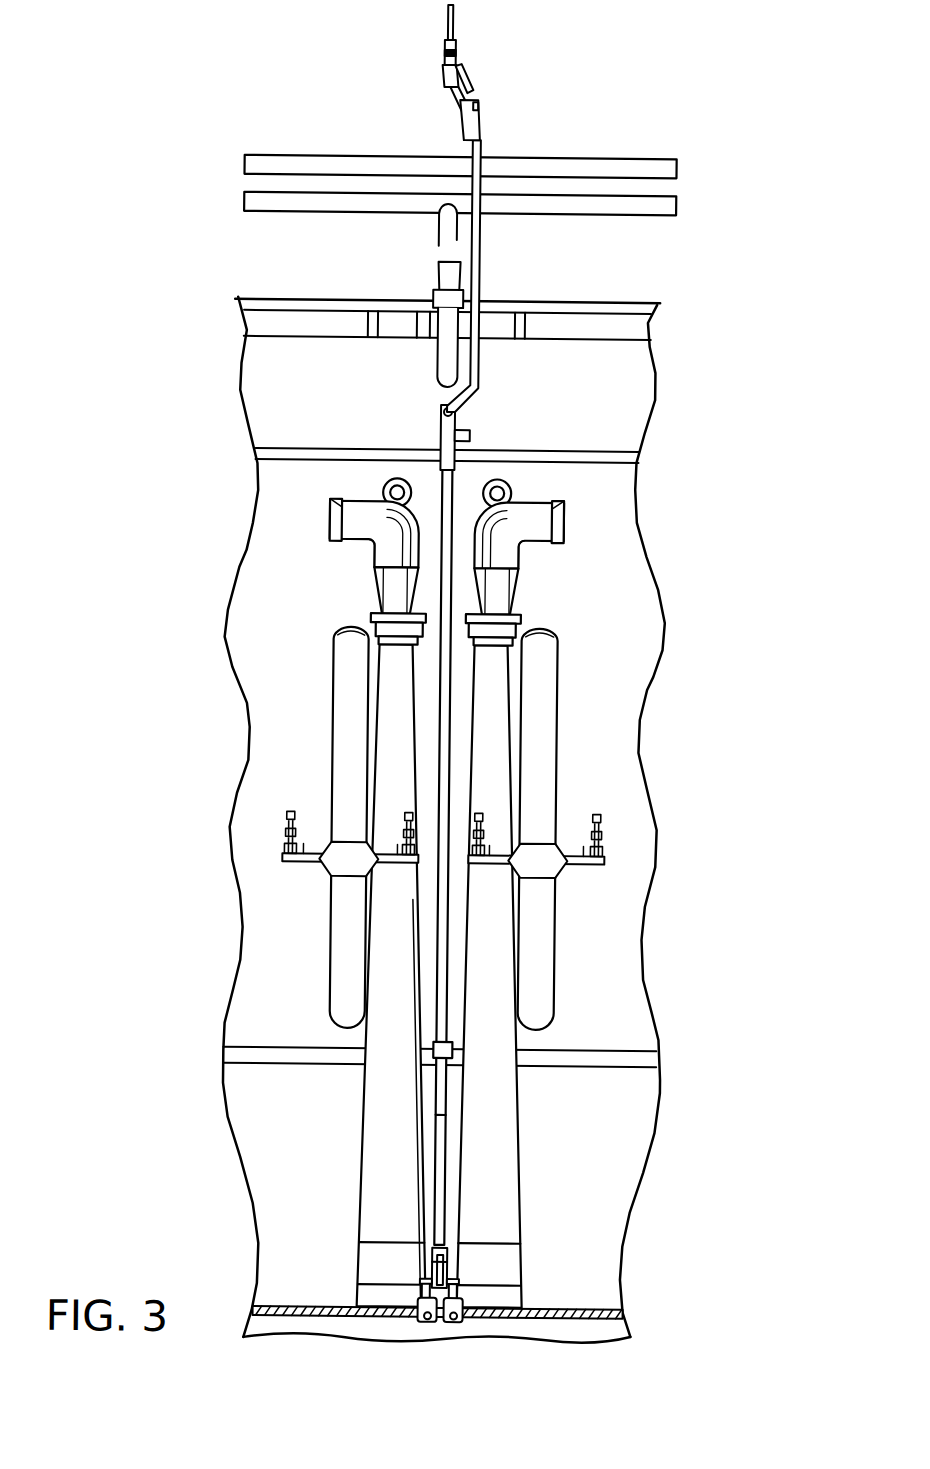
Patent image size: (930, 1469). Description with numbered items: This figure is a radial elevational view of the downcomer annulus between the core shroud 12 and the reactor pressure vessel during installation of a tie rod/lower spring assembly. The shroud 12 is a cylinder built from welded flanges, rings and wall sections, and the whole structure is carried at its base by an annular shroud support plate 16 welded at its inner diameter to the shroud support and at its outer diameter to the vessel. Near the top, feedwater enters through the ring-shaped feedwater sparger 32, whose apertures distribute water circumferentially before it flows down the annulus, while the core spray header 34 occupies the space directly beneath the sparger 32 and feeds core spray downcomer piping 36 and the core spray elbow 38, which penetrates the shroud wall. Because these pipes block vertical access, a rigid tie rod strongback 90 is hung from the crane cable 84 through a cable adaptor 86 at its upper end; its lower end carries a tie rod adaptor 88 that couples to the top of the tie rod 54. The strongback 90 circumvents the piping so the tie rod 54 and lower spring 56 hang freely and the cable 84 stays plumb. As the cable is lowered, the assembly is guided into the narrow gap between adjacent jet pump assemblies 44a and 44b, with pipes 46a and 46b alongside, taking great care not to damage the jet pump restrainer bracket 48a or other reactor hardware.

The core shroud 12 is at (626, 622).
The shroud support plate 16 is at (585, 1310).
The feedwater sparger 32 is at (355, 160).
The core spray header 34 is at (322, 208).
The core spray downcomer piping 36 is at (438, 236).
The core spray elbow 38 is at (432, 378).
The jet pump assembly 44a is at (318, 753).
The jet pump assembly 44b is at (572, 752).
The inlet pipe 46a is at (366, 1229).
The inlet pipe 46b is at (515, 1230).
The jet pump restrainer bracket 48a is at (323, 868).
The tie rod 54 is at (439, 663).
The lower spring 56 is at (438, 1185).
The cable 84 is at (448, 13).
The cable adaptor 86 is at (450, 42).
The tie rod adaptor 88 is at (437, 432).
The tie rod strongback 90 is at (477, 262).